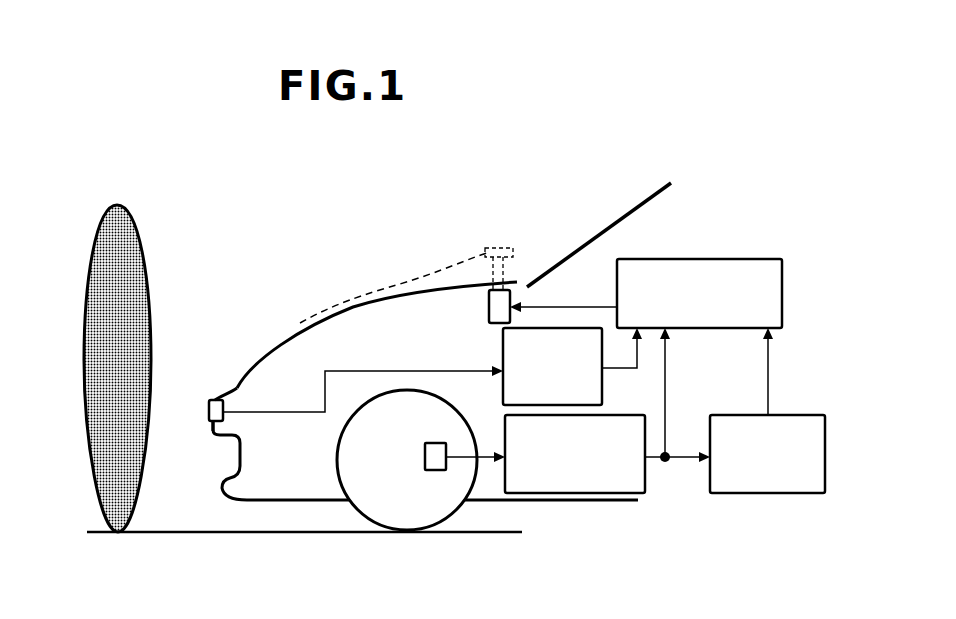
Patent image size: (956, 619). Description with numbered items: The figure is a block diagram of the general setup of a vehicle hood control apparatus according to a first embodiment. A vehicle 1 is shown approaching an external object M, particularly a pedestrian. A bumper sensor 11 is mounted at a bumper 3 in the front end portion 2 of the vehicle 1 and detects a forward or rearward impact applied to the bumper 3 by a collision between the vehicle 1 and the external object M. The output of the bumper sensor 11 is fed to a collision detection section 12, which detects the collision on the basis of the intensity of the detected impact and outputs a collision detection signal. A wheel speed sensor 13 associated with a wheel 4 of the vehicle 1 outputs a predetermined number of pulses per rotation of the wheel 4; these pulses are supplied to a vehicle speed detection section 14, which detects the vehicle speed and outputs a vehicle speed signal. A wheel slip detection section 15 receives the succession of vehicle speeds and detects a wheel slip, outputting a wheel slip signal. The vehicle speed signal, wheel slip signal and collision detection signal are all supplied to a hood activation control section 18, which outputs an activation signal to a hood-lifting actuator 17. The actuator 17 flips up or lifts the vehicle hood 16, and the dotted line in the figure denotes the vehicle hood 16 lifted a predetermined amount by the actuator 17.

The vehicle 1 is at (555, 224).
The front end portion 2 is at (223, 356).
The bumper 3 is at (208, 430).
The wheel 4 is at (353, 508).
The bumper sensor 11 is at (210, 403).
The collision detection section 12 is at (502, 352).
The wheel speed sensor 13 is at (425, 457).
The vehicle speed detection section 14 is at (547, 495).
The wheel slip detection section 15 is at (768, 495).
The vehicle hood 16 is at (360, 305).
The hood-lifting actuator 17 is at (498, 284).
The hood activation control section 18 is at (710, 259).
The external object M is at (142, 249).